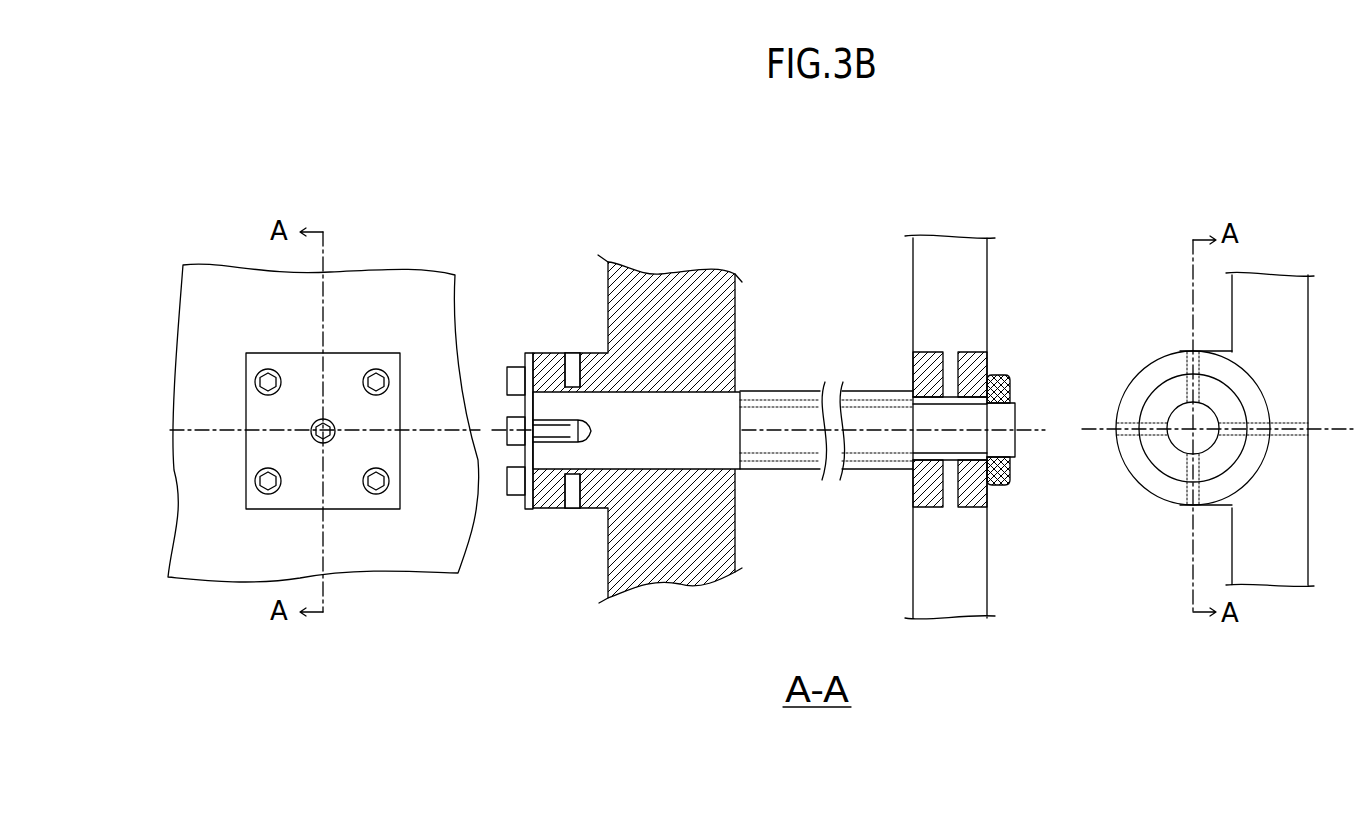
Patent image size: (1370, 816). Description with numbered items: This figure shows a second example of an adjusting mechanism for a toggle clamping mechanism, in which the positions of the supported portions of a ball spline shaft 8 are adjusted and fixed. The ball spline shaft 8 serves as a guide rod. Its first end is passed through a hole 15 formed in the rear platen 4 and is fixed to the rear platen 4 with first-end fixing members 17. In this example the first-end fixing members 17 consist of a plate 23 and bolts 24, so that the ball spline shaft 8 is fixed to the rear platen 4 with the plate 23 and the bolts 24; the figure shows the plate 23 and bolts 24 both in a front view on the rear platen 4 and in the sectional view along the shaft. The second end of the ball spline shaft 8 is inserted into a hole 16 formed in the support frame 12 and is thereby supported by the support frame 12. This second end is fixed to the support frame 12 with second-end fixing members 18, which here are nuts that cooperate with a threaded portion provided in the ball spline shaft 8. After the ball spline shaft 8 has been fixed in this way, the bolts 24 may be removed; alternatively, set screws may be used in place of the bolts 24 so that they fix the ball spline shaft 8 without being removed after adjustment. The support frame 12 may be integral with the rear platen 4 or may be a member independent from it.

The rear platen 4 is at (458, 573).
The ball spline shaft 8 is at (1008, 417).
The support frame 12 is at (978, 268).
The hole 15 is at (718, 375).
The hole 16 is at (918, 388).
The first-end fixing member 17 is at (437, 196).
The second-end fixing member 18 is at (1002, 485).
The plate 23 is at (342, 362).
The bolt 24 is at (377, 373).